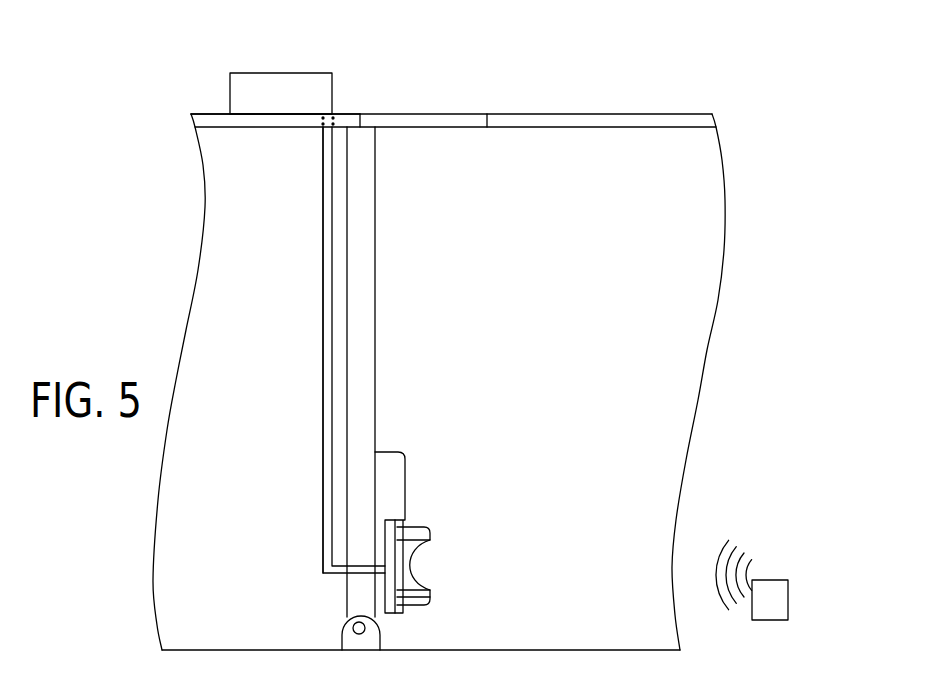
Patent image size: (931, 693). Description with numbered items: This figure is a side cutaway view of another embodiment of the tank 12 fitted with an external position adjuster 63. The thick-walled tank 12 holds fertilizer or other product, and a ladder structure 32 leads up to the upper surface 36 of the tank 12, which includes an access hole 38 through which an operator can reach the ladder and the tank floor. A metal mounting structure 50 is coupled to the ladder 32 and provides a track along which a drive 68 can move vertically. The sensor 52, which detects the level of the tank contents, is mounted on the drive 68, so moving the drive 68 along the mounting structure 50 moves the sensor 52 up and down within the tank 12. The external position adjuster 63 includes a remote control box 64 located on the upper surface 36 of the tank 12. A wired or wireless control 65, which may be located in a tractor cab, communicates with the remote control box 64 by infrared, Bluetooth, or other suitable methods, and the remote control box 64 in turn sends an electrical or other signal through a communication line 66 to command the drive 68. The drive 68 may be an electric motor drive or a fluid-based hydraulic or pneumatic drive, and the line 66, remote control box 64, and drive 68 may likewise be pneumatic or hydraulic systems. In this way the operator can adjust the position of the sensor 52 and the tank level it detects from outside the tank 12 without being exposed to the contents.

The tank 12 is at (750, 197).
The ladder structure 32 is at (378, 333).
The upper surface 36 is at (602, 120).
The access hole 38 is at (465, 100).
The mounting structure 50 is at (395, 481).
The sensor 52 is at (404, 546).
The external position adjuster 63 is at (320, 432).
The remote control box 64 is at (281, 73).
The wireless control 65 is at (790, 598).
The communication line 66 is at (327, 275).
The drive 68 is at (393, 575).